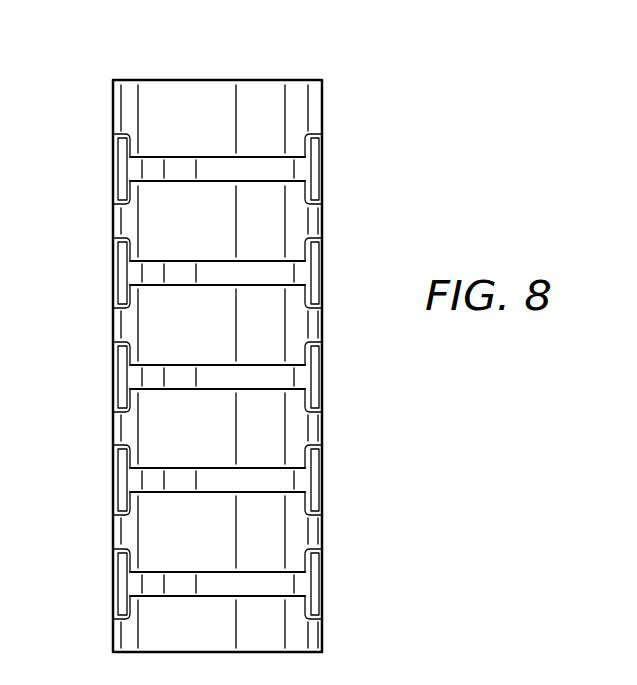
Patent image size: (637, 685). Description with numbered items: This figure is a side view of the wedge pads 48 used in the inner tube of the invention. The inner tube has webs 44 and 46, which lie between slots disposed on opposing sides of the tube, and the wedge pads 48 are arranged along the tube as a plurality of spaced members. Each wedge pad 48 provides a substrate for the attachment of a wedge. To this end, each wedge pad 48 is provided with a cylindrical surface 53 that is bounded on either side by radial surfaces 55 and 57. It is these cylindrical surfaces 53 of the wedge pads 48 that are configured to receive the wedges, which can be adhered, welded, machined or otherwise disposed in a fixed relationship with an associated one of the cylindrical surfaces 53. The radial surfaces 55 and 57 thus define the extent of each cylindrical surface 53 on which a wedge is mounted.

The web 44 is at (114, 273).
The web 46 is at (322, 374).
The wedge pad 48 is at (267, 547).
The cylindrical surface 53 is at (251, 427).
The radial surface 55 is at (207, 387).
The radial surface 57 is at (182, 468).